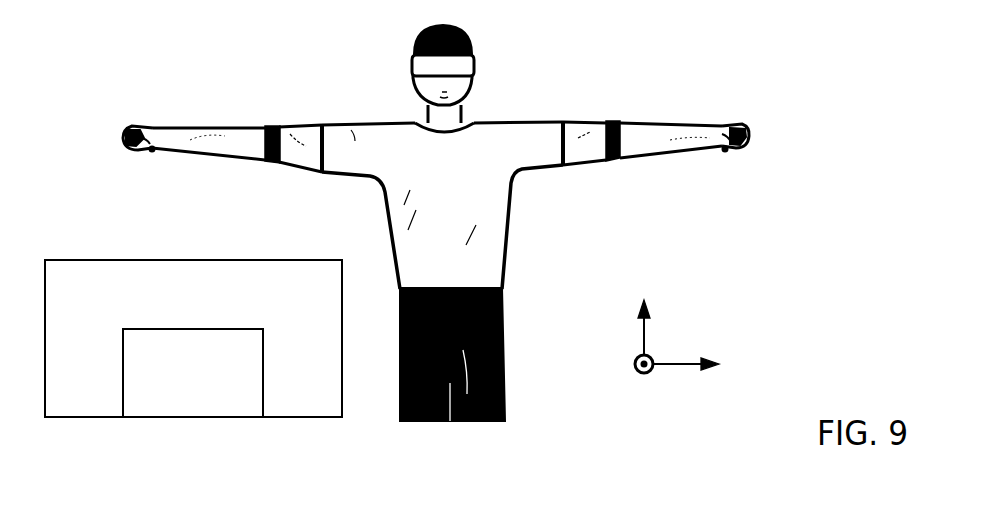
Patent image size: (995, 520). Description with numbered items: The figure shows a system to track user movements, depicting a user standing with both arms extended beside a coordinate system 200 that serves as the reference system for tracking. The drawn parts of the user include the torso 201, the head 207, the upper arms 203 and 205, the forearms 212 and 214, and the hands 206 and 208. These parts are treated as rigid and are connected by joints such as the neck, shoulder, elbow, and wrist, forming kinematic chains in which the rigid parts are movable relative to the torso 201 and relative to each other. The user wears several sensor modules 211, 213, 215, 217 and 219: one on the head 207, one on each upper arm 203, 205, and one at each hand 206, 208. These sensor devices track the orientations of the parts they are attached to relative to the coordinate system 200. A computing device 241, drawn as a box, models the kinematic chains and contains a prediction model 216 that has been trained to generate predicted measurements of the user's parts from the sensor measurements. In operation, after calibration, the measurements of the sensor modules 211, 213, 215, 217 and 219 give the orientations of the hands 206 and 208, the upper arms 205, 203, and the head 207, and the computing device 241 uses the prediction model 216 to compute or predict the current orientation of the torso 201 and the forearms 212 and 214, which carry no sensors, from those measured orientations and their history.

The reference system 200 is at (645, 332).
The torso 201 is at (510, 238).
The upper arm 203 is at (598, 163).
The upper arm 205 is at (281, 164).
The hand 206 is at (152, 126).
The head 207 is at (418, 47).
The hand 208 is at (723, 124).
The sensor module 211 is at (474, 67).
The forearm 212 is at (668, 122).
The sensor module 213 is at (612, 122).
The forearm 214 is at (215, 126).
The sensor module 215 is at (264, 125).
The prediction model 216 is at (245, 401).
The sensor module 217 is at (153, 152).
The sensor module 219 is at (726, 152).
The computing device 241 is at (302, 308).